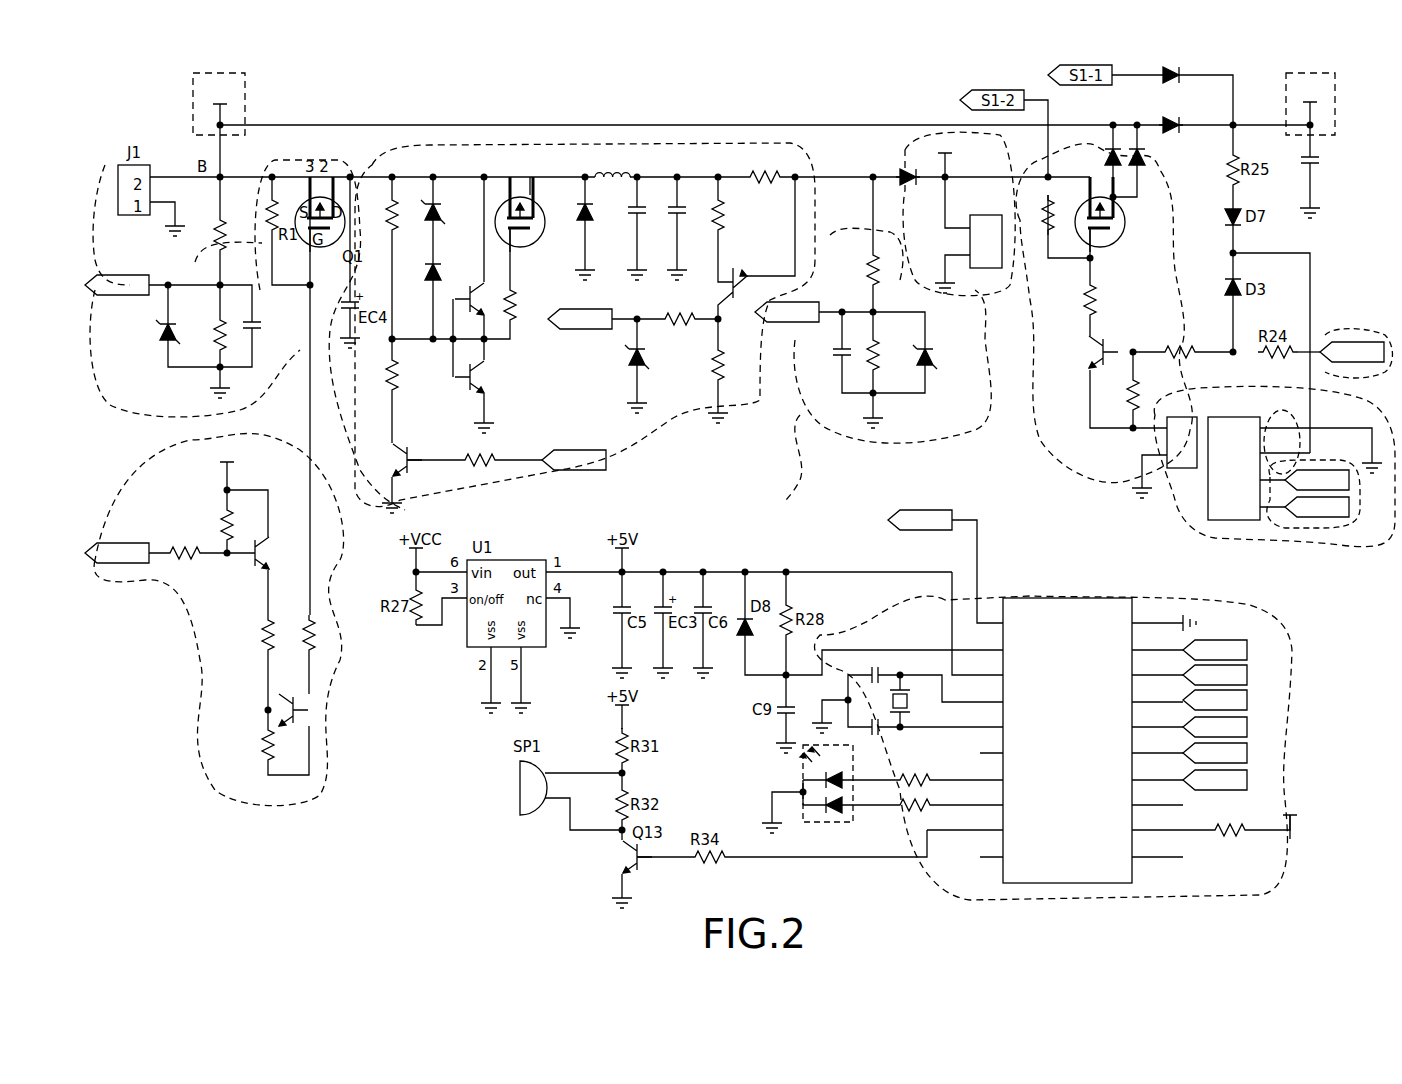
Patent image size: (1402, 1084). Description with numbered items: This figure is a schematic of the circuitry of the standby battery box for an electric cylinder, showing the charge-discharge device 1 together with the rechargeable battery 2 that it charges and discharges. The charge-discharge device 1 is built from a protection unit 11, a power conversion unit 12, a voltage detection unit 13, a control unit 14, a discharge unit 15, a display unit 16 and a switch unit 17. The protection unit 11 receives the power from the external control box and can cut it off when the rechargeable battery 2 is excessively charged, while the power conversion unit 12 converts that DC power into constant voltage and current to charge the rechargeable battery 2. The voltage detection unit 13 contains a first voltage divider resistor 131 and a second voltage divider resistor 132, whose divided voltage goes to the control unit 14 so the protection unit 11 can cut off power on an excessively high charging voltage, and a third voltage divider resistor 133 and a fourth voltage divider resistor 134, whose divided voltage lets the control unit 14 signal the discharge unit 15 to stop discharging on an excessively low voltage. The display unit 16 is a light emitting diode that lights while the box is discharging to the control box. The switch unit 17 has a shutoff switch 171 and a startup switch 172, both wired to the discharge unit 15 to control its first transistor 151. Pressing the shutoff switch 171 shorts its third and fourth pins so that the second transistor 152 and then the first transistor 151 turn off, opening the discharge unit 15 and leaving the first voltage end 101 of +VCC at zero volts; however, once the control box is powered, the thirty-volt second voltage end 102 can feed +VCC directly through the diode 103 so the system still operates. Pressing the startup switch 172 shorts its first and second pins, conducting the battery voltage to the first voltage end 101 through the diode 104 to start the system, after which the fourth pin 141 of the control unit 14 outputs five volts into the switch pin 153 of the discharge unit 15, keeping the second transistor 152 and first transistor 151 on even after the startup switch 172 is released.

The charge-discharge device 1 is at (165, 135).
The rechargeable battery 2 is at (905, 132).
The protection unit 11 is at (195, 690).
The power conversion unit 12 is at (675, 440).
The voltage detection unit 13 is at (539, 327).
The control unit 14 is at (1047, 705).
The discharge unit 15 is at (1114, 317).
The display unit 16 is at (835, 822).
The switch unit 17 is at (1246, 507).
The first voltage end 101 is at (1335, 105).
The second voltage end 102 is at (246, 103).
The diode 103 is at (1183, 118).
The diode 104 is at (1183, 72).
The first voltage divider resistor 131 is at (850, 240).
The second voltage divider resistor 132 is at (880, 355).
The third voltage divider resistor 133 is at (195, 262).
The fourth voltage divider resistor 134 is at (215, 335).
The fourth pin 141 is at (1170, 785).
The first transistor 151 is at (1115, 255).
The second transistor 152 is at (1058, 345).
The switch pin 153 is at (1345, 335).
The shutoff switch 171 is at (1300, 392).
The startup switch 172 is at (1310, 528).